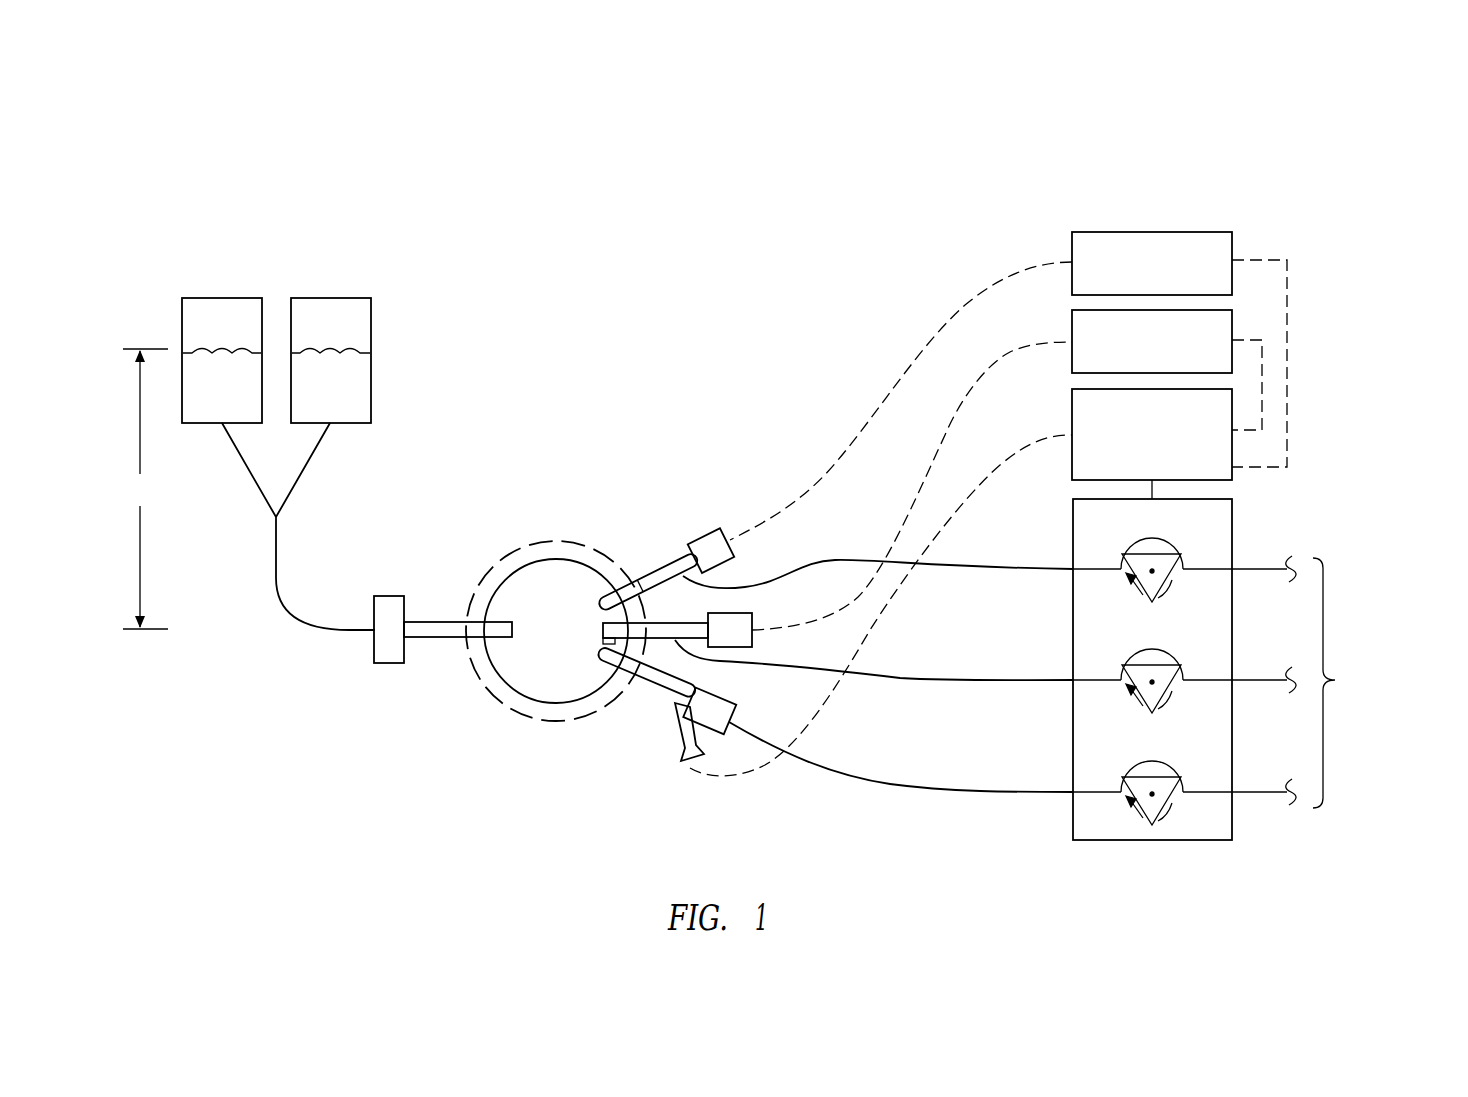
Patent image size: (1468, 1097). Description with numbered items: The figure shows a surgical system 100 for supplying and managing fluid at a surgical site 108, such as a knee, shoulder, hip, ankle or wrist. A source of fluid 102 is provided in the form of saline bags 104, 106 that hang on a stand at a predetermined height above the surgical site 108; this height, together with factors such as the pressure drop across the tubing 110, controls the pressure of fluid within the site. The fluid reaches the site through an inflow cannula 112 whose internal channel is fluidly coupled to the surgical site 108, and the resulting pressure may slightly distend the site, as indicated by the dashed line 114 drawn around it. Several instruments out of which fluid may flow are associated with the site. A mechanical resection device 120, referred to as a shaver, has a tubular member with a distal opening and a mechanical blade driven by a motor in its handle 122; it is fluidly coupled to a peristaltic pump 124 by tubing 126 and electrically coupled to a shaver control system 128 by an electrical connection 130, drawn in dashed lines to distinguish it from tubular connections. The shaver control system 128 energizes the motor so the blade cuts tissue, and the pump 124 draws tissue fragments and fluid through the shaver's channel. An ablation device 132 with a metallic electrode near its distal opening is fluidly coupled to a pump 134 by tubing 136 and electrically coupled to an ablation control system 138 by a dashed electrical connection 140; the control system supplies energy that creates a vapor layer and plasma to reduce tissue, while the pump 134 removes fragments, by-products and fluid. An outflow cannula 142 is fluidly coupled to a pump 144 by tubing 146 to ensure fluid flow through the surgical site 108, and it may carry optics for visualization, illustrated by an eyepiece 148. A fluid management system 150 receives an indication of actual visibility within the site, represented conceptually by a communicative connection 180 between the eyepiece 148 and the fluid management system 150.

The surgical system 100 is at (993, 147).
The source of fluid 102 is at (106, 343).
The saline bag 104 is at (227, 312).
The saline bag 106 is at (350, 307).
The surgical site 108 is at (539, 528).
The tubing 110 is at (350, 638).
The inflow cannula 112 is at (445, 621).
The dashed line 114 is at (498, 703).
The mechanical resection device 120 is at (661, 552).
The handle 122 is at (696, 528).
The pump 124 is at (1197, 553).
The tubing 126 is at (963, 568).
The shaver control system 128 is at (1232, 232).
The electrical connection 130 is at (898, 395).
The ablation device 132 is at (680, 660).
The pump 134 is at (1200, 667).
The tubing 136 is at (917, 678).
The ablation control system 138 is at (1072, 317).
The electrical connection 140 is at (932, 458).
The outflow cannula 142 is at (658, 692).
The pump 144 is at (1195, 775).
The tubing 146 is at (886, 781).
The eyepiece 148 is at (680, 746).
The fluid management system 150 is at (1072, 405).
The communicative connection 180 is at (762, 770).